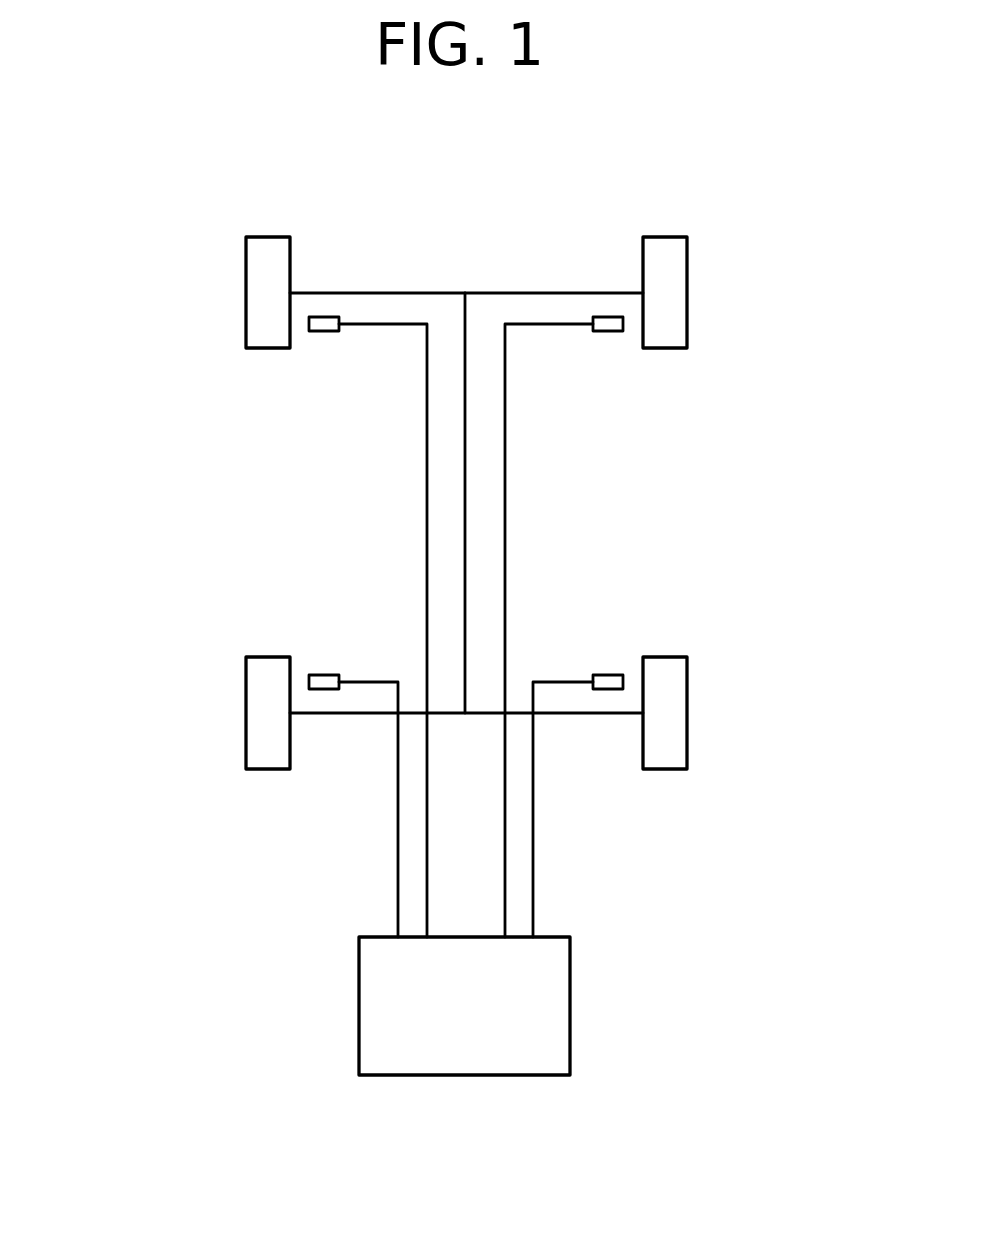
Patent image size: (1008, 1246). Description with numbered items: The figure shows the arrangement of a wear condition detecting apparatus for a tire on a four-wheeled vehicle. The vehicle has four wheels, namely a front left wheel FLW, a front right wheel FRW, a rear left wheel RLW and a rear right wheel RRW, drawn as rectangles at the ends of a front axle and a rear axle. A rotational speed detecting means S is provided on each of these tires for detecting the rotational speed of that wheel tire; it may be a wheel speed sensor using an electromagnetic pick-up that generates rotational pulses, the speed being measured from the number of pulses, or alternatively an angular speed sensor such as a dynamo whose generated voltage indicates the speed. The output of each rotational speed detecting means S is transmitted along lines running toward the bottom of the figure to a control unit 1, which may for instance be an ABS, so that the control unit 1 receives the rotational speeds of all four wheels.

The front left wheel FLW is at (263, 286).
The front right wheel FRW is at (669, 286).
The rear left wheel RLW is at (263, 706).
The rear right wheel RRW is at (669, 706).
The rotational speed detecting means S is at (323, 326).
The control unit 1 is at (533, 1022).